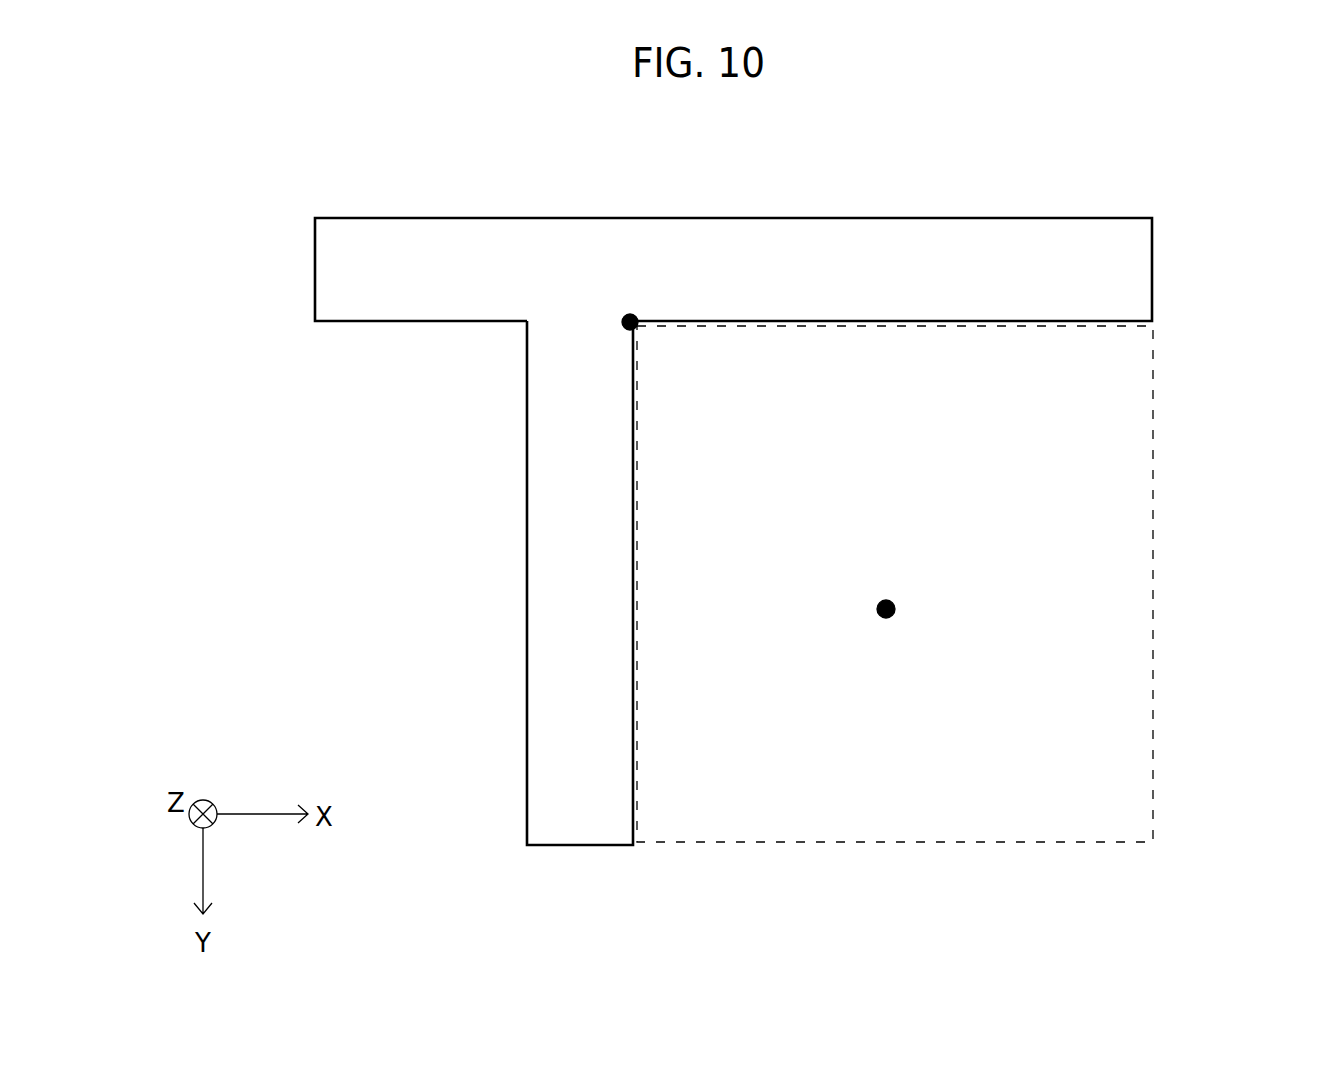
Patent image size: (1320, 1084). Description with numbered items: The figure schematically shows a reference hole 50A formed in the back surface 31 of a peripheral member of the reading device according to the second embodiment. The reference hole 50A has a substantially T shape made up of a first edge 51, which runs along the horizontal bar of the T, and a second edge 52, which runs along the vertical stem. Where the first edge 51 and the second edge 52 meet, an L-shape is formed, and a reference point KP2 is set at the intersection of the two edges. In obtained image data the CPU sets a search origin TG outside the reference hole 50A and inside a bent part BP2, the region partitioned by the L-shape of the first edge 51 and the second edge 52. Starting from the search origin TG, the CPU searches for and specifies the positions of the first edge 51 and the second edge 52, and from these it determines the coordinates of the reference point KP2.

The reference hole 50A is at (748, 490).
The back surface 31 is at (1175, 190).
The first edge 51 is at (1100, 312).
The second edge 52 is at (633, 770).
The reference point KP2 is at (636, 328).
The search origin TG is at (893, 616).
The bent part BP2 is at (938, 843).